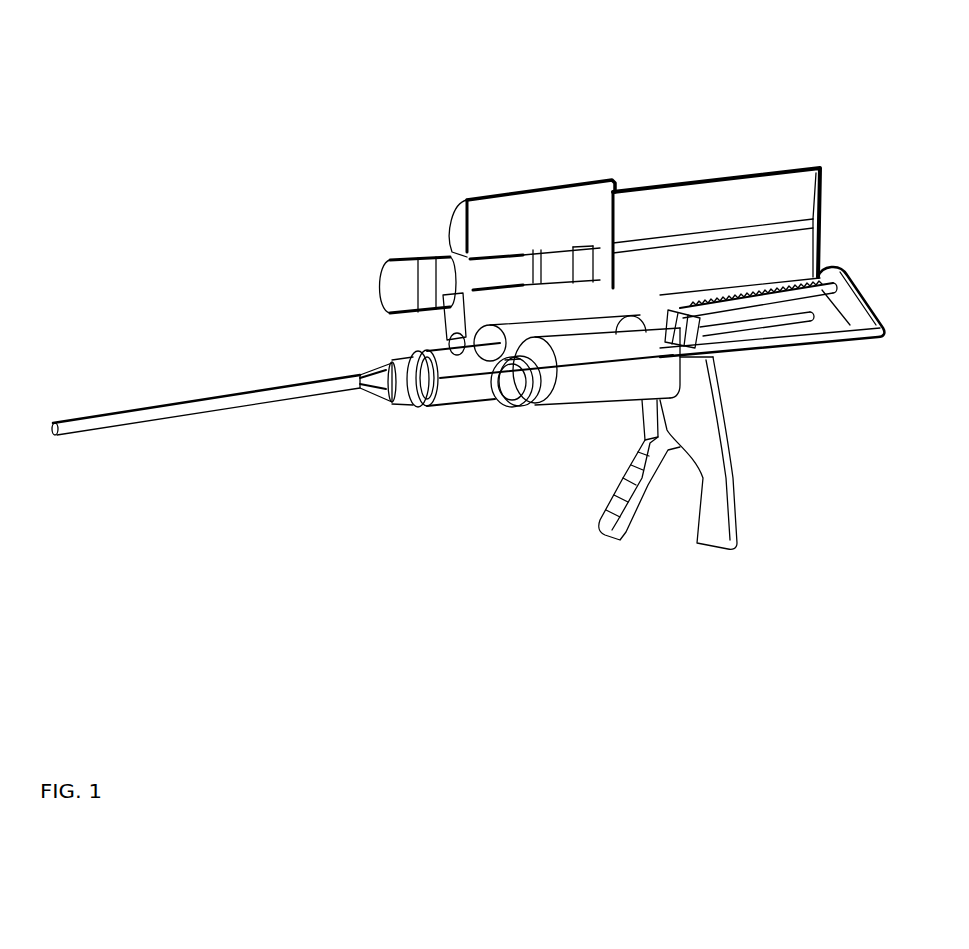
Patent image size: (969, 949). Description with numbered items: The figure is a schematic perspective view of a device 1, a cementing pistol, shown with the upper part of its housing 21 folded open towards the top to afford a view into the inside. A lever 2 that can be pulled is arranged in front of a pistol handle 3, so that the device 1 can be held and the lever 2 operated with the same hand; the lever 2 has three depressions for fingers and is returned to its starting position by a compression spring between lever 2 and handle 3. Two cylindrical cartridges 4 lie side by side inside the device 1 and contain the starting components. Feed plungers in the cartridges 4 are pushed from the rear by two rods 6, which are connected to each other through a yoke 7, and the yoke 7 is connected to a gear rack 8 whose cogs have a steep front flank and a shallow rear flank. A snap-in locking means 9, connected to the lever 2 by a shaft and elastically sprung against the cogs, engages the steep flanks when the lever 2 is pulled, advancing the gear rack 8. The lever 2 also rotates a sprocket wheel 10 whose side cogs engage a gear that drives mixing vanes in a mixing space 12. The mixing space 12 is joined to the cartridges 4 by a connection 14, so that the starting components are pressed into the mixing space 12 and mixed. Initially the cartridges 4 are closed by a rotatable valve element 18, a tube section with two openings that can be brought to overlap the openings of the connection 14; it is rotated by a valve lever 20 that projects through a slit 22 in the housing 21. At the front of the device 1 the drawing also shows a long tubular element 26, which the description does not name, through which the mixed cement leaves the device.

The device 1 is at (198, 81).
The lever 2 is at (648, 482).
The pistol handle 3 is at (720, 490).
The cylindrical cartridges 4 is at (563, 347).
The rods 6 is at (763, 320).
The yoke 7 is at (842, 310).
The gear rack 8 is at (763, 300).
The snap-in locking means 9 is at (688, 317).
The sprocket wheel 10 is at (613, 323).
The mixing space 12 is at (443, 362).
The connection 14 is at (522, 362).
The valve element 18 is at (460, 337).
The valve lever 20 is at (448, 340).
The housing 21 is at (527, 243).
The slit 22 is at (422, 257).
The needle 26 is at (193, 412).